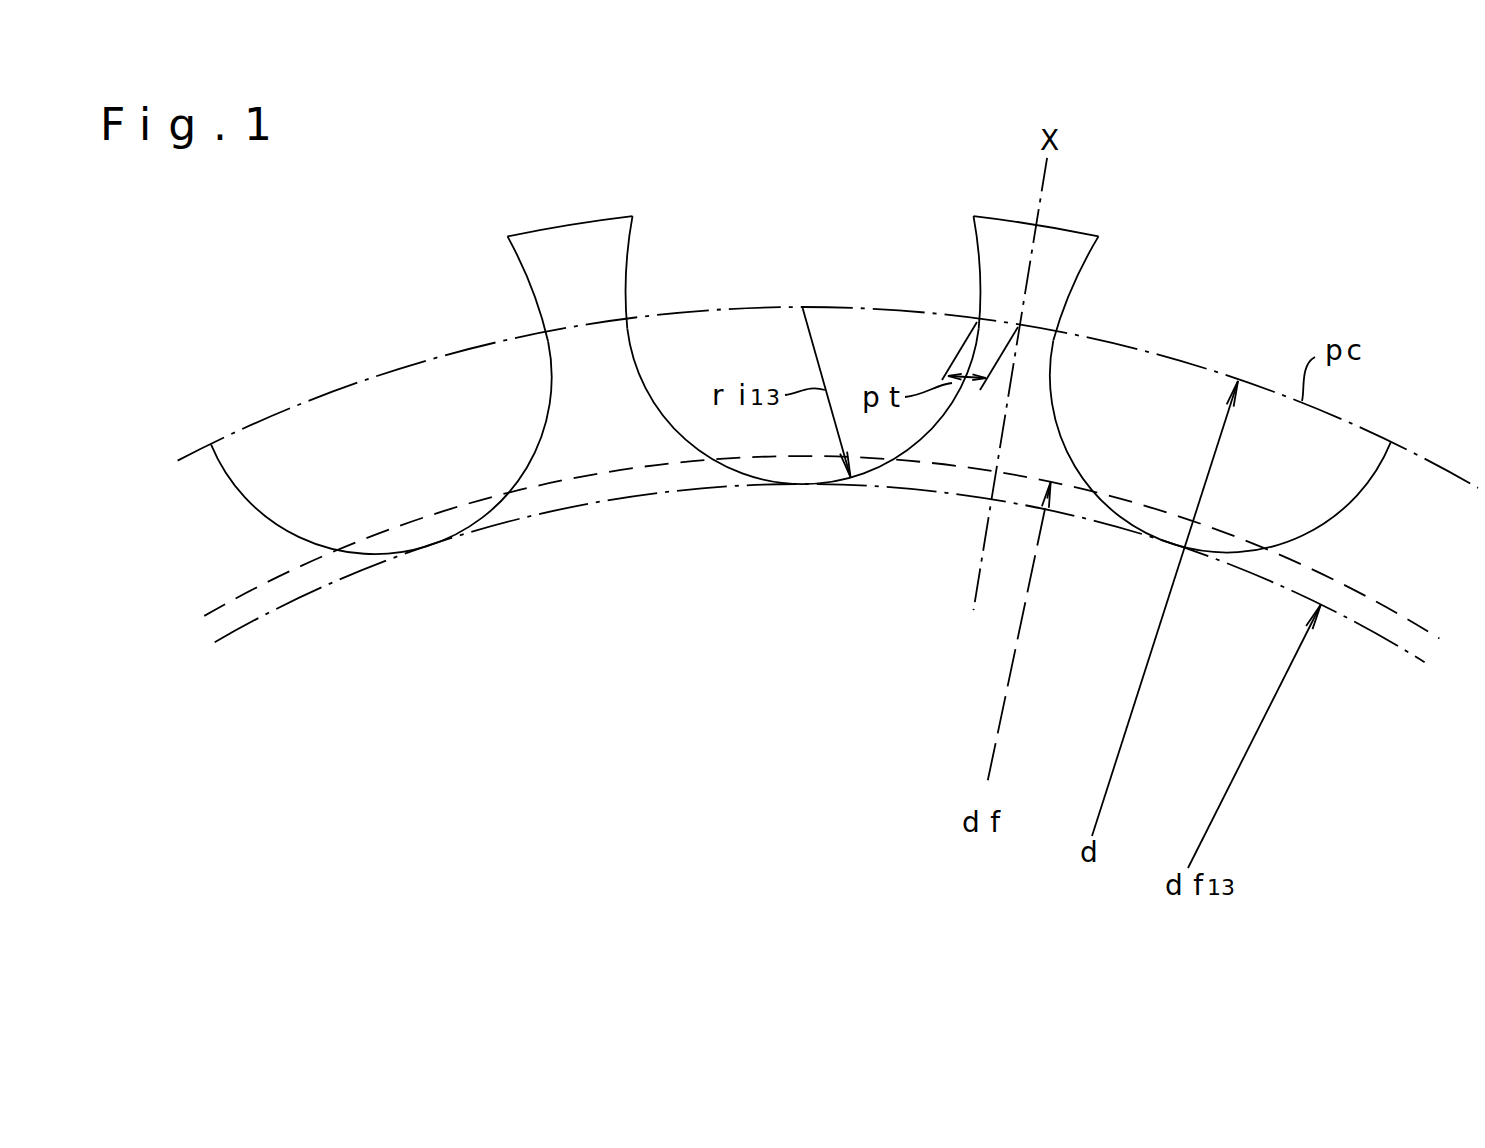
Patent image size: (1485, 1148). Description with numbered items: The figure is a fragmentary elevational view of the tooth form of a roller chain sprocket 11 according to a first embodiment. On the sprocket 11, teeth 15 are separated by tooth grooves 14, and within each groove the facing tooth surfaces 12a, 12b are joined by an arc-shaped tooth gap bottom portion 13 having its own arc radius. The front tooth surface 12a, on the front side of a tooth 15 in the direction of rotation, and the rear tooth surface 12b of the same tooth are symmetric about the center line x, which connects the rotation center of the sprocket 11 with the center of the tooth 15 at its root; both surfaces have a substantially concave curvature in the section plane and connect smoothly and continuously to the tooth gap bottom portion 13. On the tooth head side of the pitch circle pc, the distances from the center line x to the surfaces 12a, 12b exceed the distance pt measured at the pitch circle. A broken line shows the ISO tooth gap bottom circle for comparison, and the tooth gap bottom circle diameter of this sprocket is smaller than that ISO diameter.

The sprocket 11 is at (945, 687).
The front tooth surface 12a is at (521, 272).
The rear tooth surface 12b is at (630, 257).
The tooth gap bottom portion 13 is at (392, 556).
The tooth groove 14 is at (302, 437).
The tooth 15 is at (570, 226).